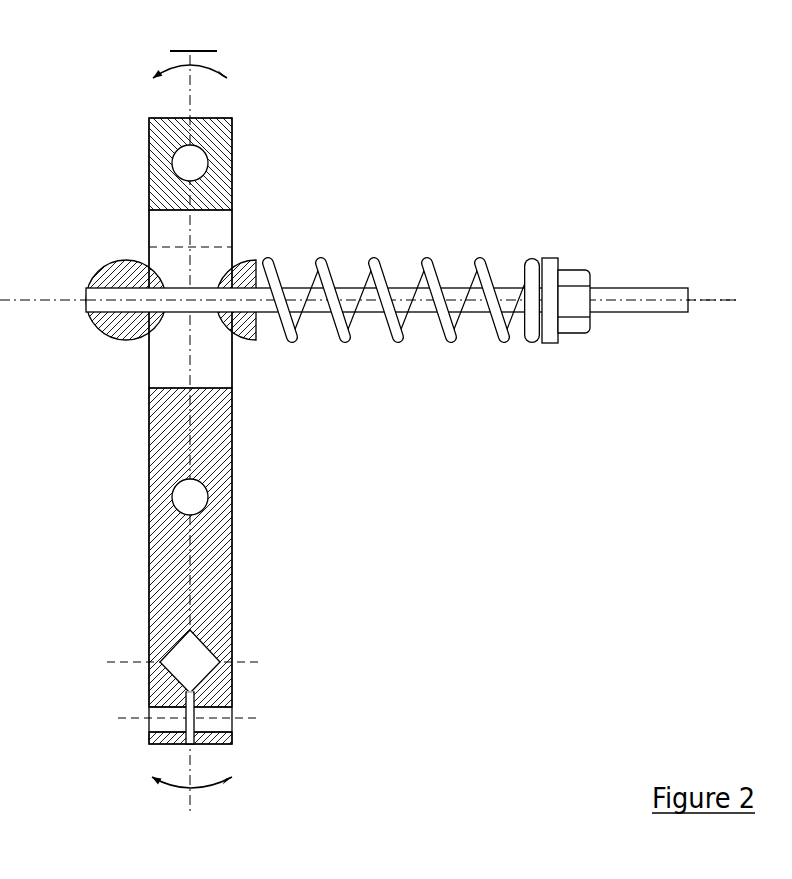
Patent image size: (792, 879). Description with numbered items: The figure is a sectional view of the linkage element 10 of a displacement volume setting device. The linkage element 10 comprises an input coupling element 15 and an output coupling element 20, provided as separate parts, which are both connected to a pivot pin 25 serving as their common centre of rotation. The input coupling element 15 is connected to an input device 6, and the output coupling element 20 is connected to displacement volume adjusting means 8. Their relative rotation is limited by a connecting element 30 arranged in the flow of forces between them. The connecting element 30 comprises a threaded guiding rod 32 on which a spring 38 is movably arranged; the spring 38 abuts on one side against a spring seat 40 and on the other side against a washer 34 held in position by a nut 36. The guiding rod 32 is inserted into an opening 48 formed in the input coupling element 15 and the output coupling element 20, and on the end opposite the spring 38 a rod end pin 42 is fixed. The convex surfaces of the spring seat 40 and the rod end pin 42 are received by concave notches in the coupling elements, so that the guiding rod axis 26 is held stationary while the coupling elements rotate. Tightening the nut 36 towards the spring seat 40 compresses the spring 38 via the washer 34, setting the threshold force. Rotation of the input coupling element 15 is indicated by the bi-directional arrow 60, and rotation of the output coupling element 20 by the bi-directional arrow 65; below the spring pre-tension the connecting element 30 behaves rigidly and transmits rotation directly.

The linkage element 10 is at (345, 82).
The input device 6 is at (203, 150).
The input coupling element 15 is at (220, 185).
The spring seat 40 is at (243, 262).
The rod end pin 42 is at (103, 263).
The opening 48 is at (222, 350).
The output coupling element 20 is at (217, 572).
The pivot pin 25 is at (200, 487).
The displacement volume adjusting means 8 is at (207, 658).
The bi-directional arrow 60 is at (150, 77).
The bi-directional arrow 65 is at (217, 787).
The guiding rod axis 26 is at (705, 300).
The guiding rod 32 is at (650, 285).
The washer 34 is at (552, 268).
The nut 36 is at (580, 312).
The spring 38 is at (455, 312).
The connecting element 30 is at (532, 352).